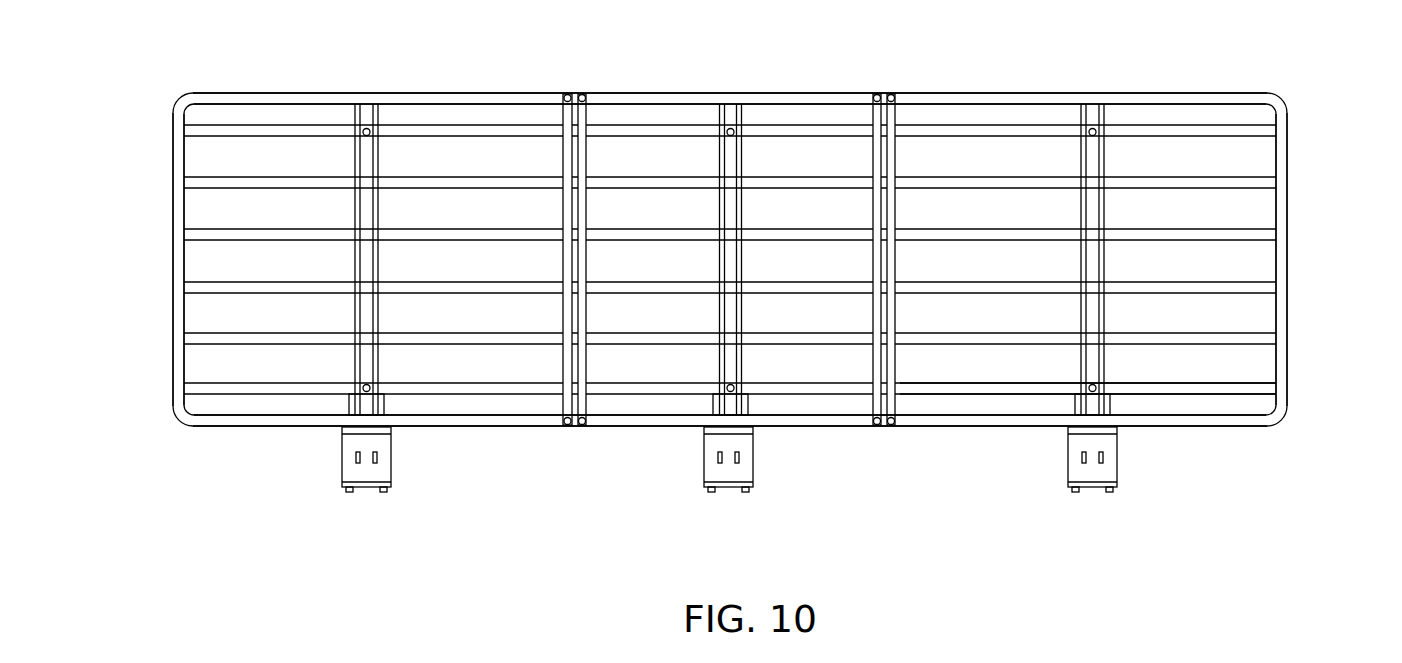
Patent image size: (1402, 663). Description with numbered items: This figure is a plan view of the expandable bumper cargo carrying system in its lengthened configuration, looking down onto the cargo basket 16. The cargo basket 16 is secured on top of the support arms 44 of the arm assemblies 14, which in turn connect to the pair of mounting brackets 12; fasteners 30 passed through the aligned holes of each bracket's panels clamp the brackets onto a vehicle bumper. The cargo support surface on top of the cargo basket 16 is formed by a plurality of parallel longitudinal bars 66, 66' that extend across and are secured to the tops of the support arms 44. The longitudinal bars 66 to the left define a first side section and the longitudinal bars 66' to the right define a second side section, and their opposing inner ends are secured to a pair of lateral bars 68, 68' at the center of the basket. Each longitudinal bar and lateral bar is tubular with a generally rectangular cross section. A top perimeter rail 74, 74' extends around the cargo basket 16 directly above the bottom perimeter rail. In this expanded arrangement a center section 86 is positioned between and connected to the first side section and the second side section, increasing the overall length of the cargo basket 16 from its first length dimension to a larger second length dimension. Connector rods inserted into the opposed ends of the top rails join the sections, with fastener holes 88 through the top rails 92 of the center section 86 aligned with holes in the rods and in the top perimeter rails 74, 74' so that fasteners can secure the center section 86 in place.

The cargo basket 16 is at (1298, 158).
The top perimeter rail 74 is at (135, 259).
The top perimeter rail 74' is at (1327, 259).
The top rails of the center section 92 is at (803, 97).
The longitudinal bars 66 is at (699, 259).
The longitudinal bars 66' is at (1113, 425).
The arm assemblies 14 is at (344, 319).
The support arms 44 is at (368, 215).
The lateral bar 68 is at (535, 280).
The lateral bar 68' is at (927, 280).
The fastener holes 88 is at (568, 82).
The center section 86 is at (642, 448).
The mounting brackets 12 is at (365, 502).
The fasteners 30 is at (345, 503).